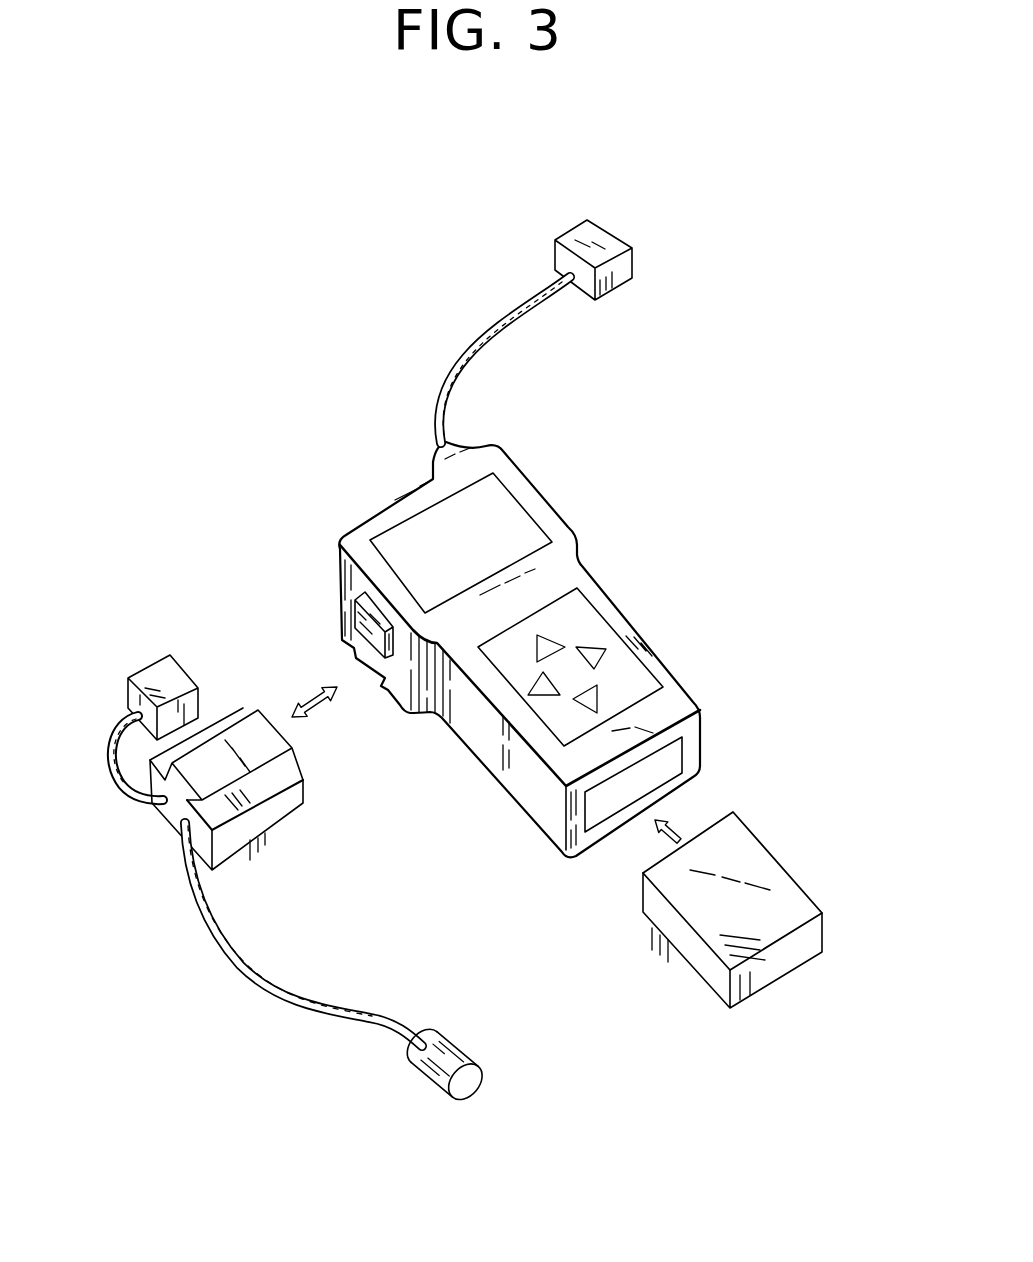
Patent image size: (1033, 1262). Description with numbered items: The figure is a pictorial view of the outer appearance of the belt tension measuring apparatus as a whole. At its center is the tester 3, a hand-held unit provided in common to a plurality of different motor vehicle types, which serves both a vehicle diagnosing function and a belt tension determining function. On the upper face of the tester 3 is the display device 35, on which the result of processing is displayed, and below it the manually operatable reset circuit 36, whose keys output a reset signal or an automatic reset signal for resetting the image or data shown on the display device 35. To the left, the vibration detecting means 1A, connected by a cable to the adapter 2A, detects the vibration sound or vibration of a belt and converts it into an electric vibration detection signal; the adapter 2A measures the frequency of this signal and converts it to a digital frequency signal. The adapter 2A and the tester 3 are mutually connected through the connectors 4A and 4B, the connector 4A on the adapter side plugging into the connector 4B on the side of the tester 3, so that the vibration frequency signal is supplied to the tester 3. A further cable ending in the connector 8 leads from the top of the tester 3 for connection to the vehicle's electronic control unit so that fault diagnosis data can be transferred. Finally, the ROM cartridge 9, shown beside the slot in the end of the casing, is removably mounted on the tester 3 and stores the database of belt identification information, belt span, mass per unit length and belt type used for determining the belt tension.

The tester 3 is at (392, 503).
The display device 35 is at (506, 528).
The manually operatable reset circuit 36 is at (580, 622).
The connector 4B is at (357, 615).
The connector 4A is at (160, 673).
The adapter 2A is at (283, 828).
The vibration detecting means 1A is at (460, 1043).
The connector 8 is at (615, 232).
The ROM cartridge 9 is at (748, 863).